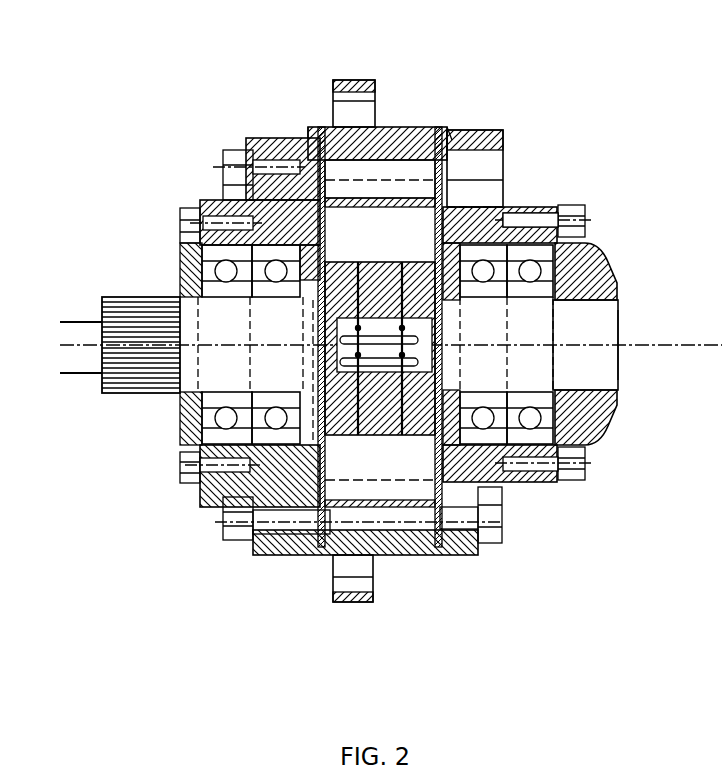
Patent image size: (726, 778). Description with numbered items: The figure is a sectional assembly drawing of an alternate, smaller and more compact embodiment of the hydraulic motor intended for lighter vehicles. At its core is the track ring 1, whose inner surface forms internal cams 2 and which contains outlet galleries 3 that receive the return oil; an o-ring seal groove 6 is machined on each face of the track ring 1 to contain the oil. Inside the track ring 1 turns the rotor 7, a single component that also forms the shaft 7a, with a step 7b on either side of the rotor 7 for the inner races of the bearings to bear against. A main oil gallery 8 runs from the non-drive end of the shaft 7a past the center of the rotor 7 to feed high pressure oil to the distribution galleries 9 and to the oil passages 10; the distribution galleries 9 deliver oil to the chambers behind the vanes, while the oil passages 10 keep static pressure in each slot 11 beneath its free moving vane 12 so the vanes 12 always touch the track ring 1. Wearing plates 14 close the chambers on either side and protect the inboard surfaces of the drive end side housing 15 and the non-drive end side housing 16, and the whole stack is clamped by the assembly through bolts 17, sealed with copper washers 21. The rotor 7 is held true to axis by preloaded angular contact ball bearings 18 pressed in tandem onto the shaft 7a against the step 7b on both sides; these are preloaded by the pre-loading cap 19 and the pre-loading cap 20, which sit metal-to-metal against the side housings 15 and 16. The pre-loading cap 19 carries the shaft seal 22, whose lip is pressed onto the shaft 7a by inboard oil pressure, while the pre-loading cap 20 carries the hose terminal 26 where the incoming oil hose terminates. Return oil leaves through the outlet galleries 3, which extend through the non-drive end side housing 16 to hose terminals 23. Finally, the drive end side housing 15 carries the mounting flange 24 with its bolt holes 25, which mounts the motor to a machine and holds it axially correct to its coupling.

The track ring 1 is at (383, 127).
The internal cam 2 is at (340, 198).
The outlet gallery 3 is at (395, 172).
The o-ring seal groove 6 is at (434, 128).
The rotor 7 is at (316, 190).
The shaft 7a is at (230, 360).
The step 7b is at (313, 385).
The main oil gallery 8 is at (597, 275).
The distribution gallery 9 is at (413, 343).
The oil passage 10 is at (505, 488).
The slot 11 is at (503, 483).
The vane 12 is at (352, 472).
The wearing plate 14 is at (440, 505).
The drive end side housing 15 is at (207, 207).
The non-drive end side housing 16 is at (460, 132).
The assembly through bolt 17 is at (260, 548).
The angular contact ball bearing 18 is at (543, 432).
The pre-loading cap 19 is at (178, 238).
The pre-loading cap 20 is at (577, 270).
The copper washer 21 is at (253, 505).
The shaft seal 22 is at (187, 290).
The hose terminal 23 is at (483, 167).
The flange 24 is at (350, 598).
The bolt hole 25 is at (368, 583).
The hose terminal 26 is at (610, 318).